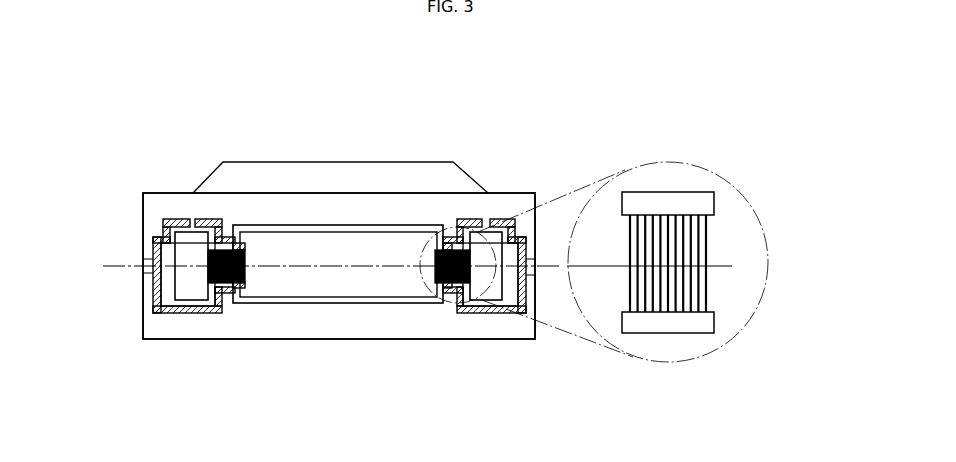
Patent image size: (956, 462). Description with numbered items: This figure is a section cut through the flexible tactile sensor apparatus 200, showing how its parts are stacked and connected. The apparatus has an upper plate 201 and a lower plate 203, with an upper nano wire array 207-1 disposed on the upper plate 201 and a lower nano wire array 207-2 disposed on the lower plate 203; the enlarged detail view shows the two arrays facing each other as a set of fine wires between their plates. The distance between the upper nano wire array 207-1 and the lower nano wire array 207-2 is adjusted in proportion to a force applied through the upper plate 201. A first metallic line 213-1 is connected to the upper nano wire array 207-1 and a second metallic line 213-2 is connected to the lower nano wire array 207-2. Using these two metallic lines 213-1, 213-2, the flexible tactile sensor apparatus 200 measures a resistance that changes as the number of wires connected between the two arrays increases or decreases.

The flexible tactile sensor apparatus 200 is at (165, 109).
The upper plate 201 is at (155, 208).
The lower plate 203 is at (155, 326).
The first metallic line 213-1 is at (478, 222).
The second metallic line 213-2 is at (480, 308).
The upper nano wire array 207-1 is at (707, 235).
The lower nano wire array 207-2 is at (707, 293).